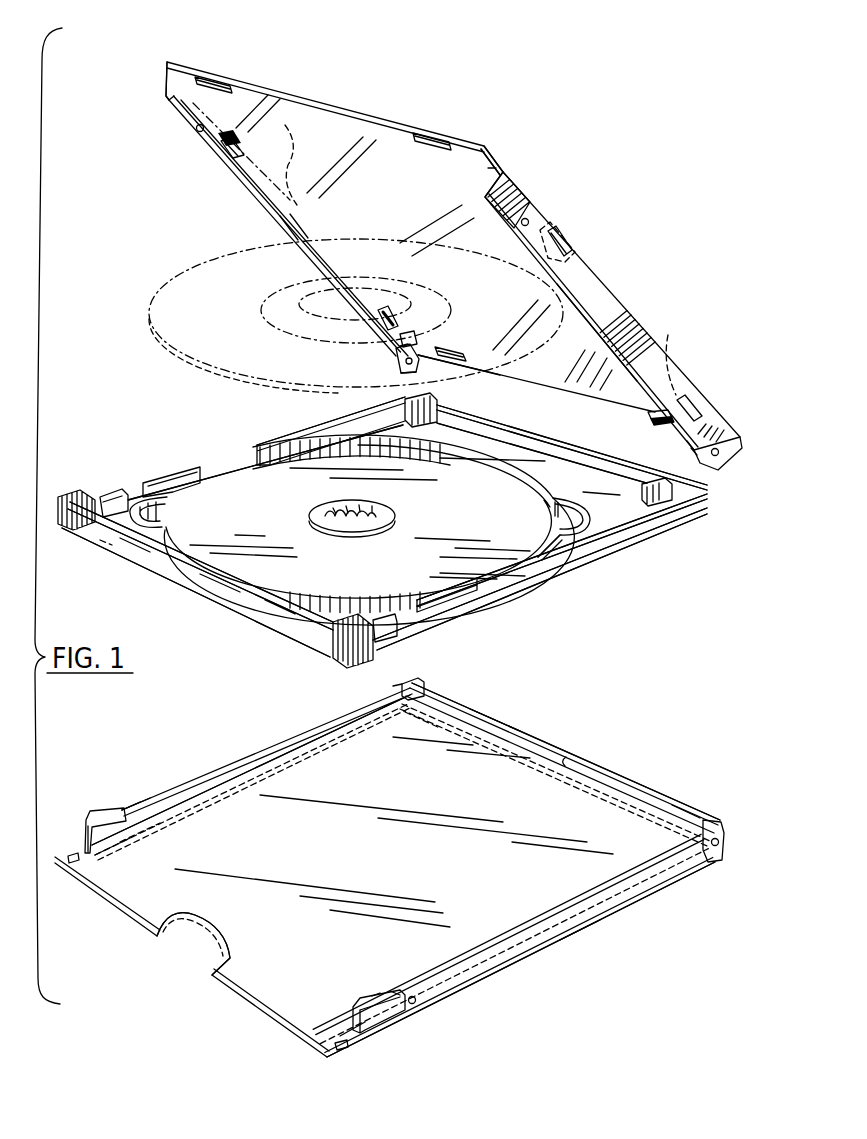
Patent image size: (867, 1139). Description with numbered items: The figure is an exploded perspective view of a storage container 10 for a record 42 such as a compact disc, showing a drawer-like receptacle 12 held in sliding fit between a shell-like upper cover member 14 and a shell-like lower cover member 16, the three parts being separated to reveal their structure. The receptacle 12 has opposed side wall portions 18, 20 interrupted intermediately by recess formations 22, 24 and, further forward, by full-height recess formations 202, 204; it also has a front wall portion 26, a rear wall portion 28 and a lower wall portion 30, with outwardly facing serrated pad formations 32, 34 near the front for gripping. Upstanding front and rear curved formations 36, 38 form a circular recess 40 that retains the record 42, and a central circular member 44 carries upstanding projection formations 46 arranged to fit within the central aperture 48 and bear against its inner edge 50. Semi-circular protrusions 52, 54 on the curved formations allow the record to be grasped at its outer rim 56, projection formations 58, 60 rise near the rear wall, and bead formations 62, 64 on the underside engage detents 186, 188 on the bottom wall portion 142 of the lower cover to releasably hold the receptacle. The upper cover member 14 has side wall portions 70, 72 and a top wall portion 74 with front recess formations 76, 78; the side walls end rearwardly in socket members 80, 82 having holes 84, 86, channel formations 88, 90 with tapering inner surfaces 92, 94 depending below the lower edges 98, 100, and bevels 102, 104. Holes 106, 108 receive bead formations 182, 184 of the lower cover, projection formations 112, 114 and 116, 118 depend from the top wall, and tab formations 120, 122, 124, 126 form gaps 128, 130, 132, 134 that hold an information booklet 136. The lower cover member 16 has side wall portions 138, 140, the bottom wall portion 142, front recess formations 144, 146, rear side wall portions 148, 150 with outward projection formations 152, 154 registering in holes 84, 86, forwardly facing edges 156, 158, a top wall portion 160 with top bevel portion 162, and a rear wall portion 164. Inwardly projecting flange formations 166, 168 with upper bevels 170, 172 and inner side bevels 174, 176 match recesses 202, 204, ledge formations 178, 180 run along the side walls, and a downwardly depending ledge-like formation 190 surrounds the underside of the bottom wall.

The storage container 10 is at (583, 140).
The drawer-like receptacle 12 is at (607, 578).
The upper cover member 14 is at (631, 205).
The lower cover member 16 is at (600, 1012).
The side wall portion 18 is at (600, 547).
The side wall portion 20 is at (307, 423).
The recess formation 22 is at (513, 583).
The recess formation 24 is at (237, 460).
The front wall portion 26 is at (207, 585).
The rear wall portion 28 is at (505, 428).
The lower wall portion 30 is at (528, 458).
The serrated pad formation 32 is at (412, 627).
The serrated pad formation 34 is at (73, 490).
The front curved formation 36 is at (335, 606).
The rear curved formation 38 is at (525, 486).
The circular recess 40 is at (392, 530).
The record 42 is at (182, 260).
The circular member 44 is at (392, 520).
The projection formations 46 is at (380, 540).
The central aperture 48 is at (265, 292).
The inner edge 50 is at (320, 276).
The semi-circular protrusion 52 is at (160, 512).
The semi-circular protrusion 54 is at (598, 532).
The outer rim 56 is at (152, 320).
The projection formation 58 is at (660, 506).
The projection formation 60 is at (447, 423).
The bead formation 62 is at (345, 662).
The bead formation 64 is at (104, 547).
The side wall portion 70 is at (632, 322).
The side wall portion 72 is at (247, 180).
The top wall portion 74 is at (348, 127).
The front recess formation 76 is at (488, 168).
The front recess formation 78 is at (166, 90).
The socket member 80 is at (718, 452).
The socket member 82 is at (395, 380).
The hole 84 is at (723, 460).
The hole 86 is at (400, 344).
The channel formation 88 is at (686, 444).
The channel formation 90 is at (410, 364).
The inner surface 92 is at (692, 452).
The inner surface 94 is at (450, 373).
The lower edge 98 is at (582, 300).
The lower edge 100 is at (262, 200).
The bevel 102 is at (700, 408).
The bevel 104 is at (405, 358).
The hole 106 is at (527, 213).
The hole 108 is at (196, 127).
The projection formation 112 is at (432, 132).
The projection formation 114 is at (228, 78).
The projection formation 116 is at (655, 408).
The projection formation 118 is at (458, 350).
The tab formation 120 is at (568, 248).
The tab formation 122 is at (220, 150).
The tab formation 124 is at (698, 405).
The tab formation 126 is at (405, 338).
The gap 128 is at (552, 228).
The gap 130 is at (233, 136).
The gap 132 is at (670, 380).
The gap 134 is at (383, 308).
The information booklet 136 is at (294, 152).
The side wall portion 138 is at (603, 897).
The side wall portion 140 is at (267, 760).
The bottom wall portion 142 is at (394, 832).
The recess formation 144 is at (344, 1027).
The recess formation 146 is at (78, 820).
The rear side wall portion 148 is at (718, 820).
The rear side wall portion 150 is at (413, 698).
The projection formation 152 is at (717, 862).
The projection formation 154 is at (395, 682).
The forwardly facing edge 156 is at (675, 815).
The forwardly facing edge 158 is at (402, 688).
The top wall portion 160 is at (537, 737).
The top bevel portion 162 is at (493, 725).
The rear wall portion 164 is at (565, 762).
The flange formation 166 is at (365, 1000).
The flange formation 168 is at (100, 826).
The upper bevel 170 is at (397, 992).
The upper bevel 172 is at (125, 810).
The inner side bevel 174 is at (375, 993).
The inner side bevel 176 is at (122, 831).
The ledge formation 178 is at (577, 930).
The ledge formation 180 is at (88, 826).
The bead formation 182 is at (417, 1004).
The bead formation 184 is at (113, 795).
The detent 186 is at (343, 1049).
The detent 188 is at (72, 856).
The ledge-like formation 190 is at (160, 937).
The recess formation 202 is at (420, 612).
The recess formation 204 is at (140, 483).